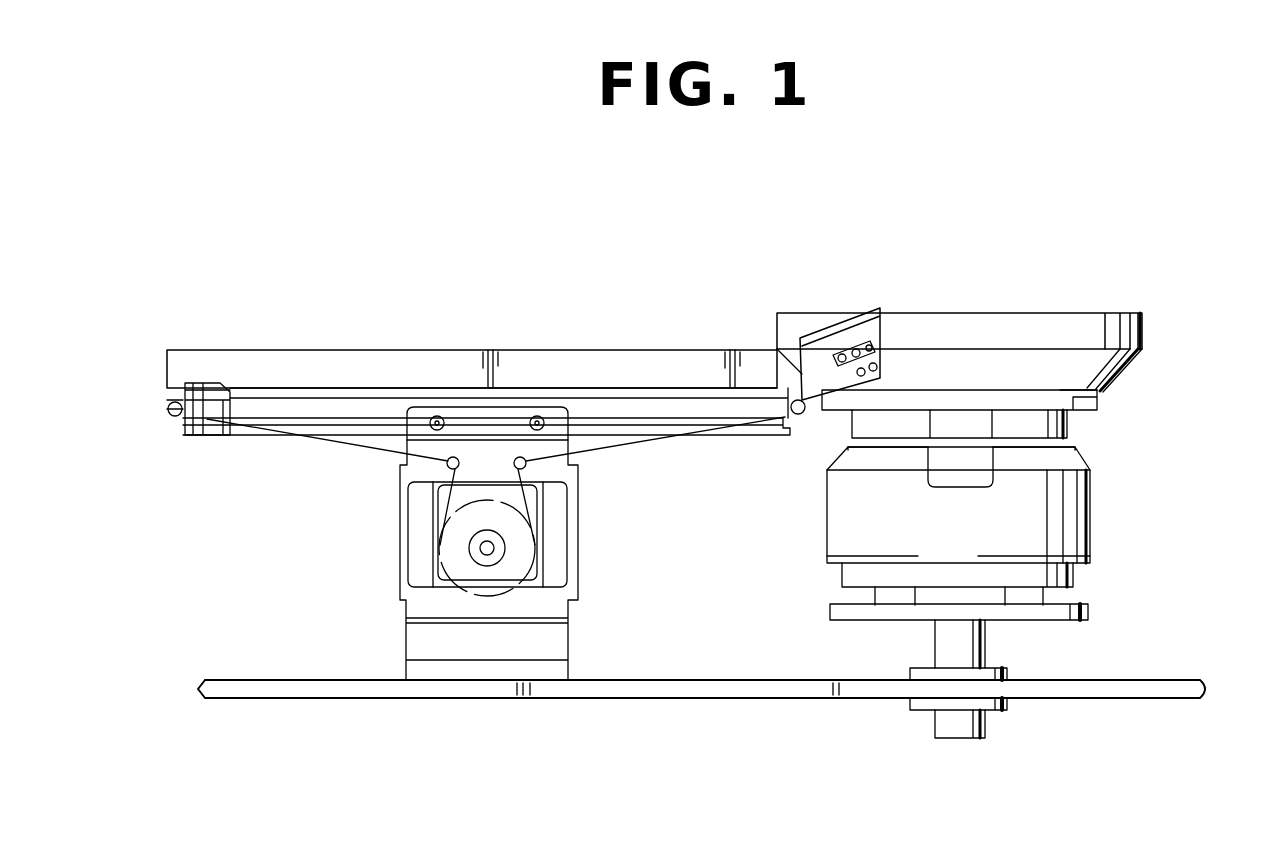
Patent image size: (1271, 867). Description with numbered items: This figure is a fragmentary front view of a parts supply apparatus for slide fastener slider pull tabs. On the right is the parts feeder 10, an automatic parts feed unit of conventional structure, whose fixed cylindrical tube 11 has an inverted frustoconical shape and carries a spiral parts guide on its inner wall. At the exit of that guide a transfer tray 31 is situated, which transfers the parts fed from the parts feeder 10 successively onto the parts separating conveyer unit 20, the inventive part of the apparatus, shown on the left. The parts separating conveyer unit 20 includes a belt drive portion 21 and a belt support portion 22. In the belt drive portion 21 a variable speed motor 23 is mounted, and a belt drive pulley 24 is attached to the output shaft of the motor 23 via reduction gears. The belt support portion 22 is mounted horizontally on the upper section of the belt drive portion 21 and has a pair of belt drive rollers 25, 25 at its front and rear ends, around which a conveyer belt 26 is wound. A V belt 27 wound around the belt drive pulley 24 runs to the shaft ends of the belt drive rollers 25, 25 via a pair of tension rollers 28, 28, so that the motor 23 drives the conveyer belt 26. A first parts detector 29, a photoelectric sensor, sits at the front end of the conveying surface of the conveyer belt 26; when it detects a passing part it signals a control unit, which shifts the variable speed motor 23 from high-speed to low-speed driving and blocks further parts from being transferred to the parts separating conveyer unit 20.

The parts feeder 10 is at (1140, 293).
The fixed cylindrical tube 11 is at (1130, 376).
The parts separating conveyer unit 20 is at (565, 320).
The belt drive portion 21 is at (585, 538).
The belt support portion 22 is at (250, 437).
The variable speed motor 23 is at (470, 549).
The belt drive pulley 24 is at (513, 568).
The belt drive rollers 25 is at (172, 417).
The conveyer belt 26 is at (643, 396).
The V belt 27 is at (365, 442).
The tension rollers 28 is at (448, 466).
The first parts detector 29 is at (193, 400).
The transfer tray 31 is at (818, 336).